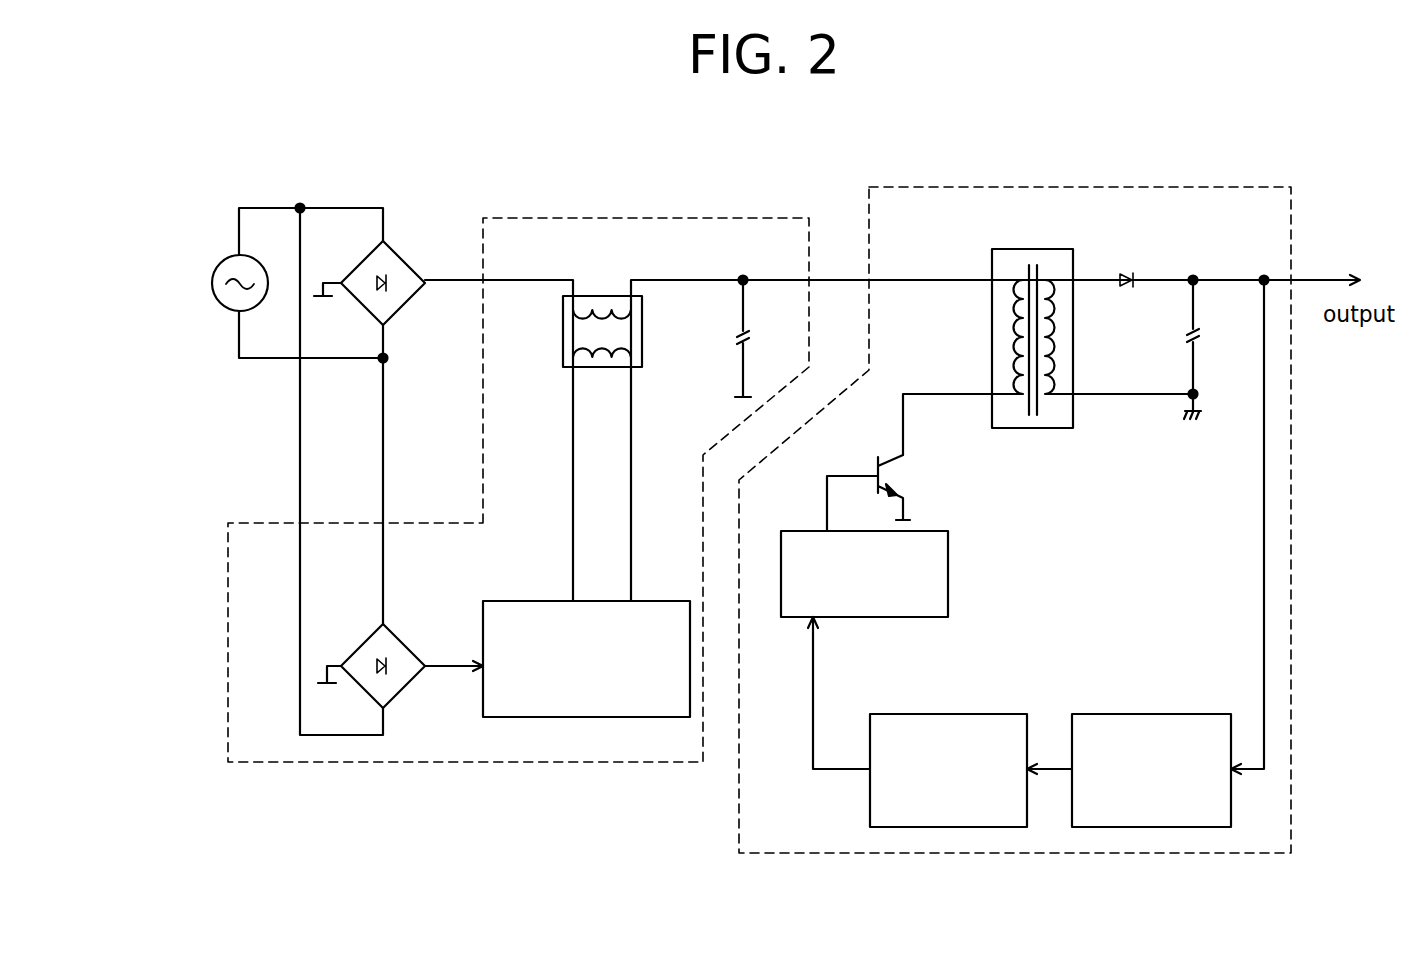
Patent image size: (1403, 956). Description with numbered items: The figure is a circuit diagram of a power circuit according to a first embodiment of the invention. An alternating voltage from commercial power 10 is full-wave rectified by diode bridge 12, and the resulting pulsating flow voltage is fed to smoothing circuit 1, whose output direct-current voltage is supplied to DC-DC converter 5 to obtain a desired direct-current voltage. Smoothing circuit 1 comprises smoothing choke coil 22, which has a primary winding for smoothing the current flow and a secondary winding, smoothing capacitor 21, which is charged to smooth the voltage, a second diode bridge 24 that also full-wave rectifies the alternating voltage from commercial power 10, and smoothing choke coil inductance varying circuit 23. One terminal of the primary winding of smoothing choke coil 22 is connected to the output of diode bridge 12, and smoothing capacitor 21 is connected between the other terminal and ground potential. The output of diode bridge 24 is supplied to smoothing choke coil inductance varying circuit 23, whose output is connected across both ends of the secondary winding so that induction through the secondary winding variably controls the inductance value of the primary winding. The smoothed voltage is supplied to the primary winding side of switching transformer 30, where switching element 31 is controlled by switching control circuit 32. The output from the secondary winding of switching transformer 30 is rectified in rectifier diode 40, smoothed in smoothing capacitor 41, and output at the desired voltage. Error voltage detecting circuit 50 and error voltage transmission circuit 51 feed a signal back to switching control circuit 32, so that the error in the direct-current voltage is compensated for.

The smoothing circuit 1 is at (612, 218).
The DC-DC converter 5 is at (1135, 187).
The commercial power 10 is at (213, 288).
The diode bridge 12 is at (398, 258).
The smoothing capacitor 21 is at (750, 341).
The smoothing choke coil 22 is at (642, 330).
The smoothing choke coil inductance varying circuit 23 is at (561, 717).
The diode bridge 24 is at (400, 640).
The switching transformer 30 is at (1020, 249).
The switching element 31 is at (876, 471).
The switching control circuit 32 is at (950, 573).
The rectifier diode 40 is at (1129, 264).
The smoothing capacitor 41 is at (1186, 343).
The error voltage detecting circuit 50 is at (1152, 714).
The error voltage transmission circuit 51 is at (960, 714).